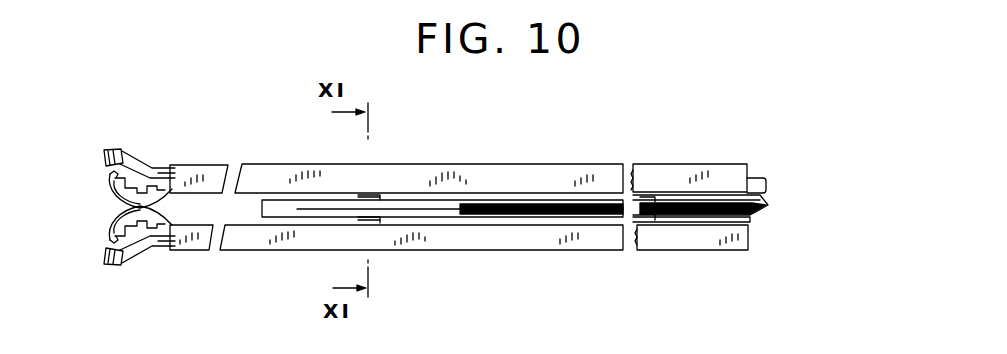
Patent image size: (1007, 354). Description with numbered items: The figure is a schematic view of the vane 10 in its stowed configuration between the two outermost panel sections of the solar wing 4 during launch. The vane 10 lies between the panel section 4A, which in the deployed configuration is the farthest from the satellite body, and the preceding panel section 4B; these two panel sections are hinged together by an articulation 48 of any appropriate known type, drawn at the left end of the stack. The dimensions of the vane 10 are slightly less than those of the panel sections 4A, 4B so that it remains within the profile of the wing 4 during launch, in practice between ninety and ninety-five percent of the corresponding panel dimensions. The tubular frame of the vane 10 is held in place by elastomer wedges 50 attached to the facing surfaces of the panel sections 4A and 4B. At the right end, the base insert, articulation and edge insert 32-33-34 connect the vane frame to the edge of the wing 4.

The wing 4 is at (184, 261).
The panel section 4A is at (525, 172).
The preceding panel section 4B is at (447, 240).
The vane 10 is at (528, 219).
The articulation 48 is at (126, 207).
The elastomer wedges 50 is at (377, 220).
The base insert, articulation and edge insert 32-33-34 is at (762, 196).